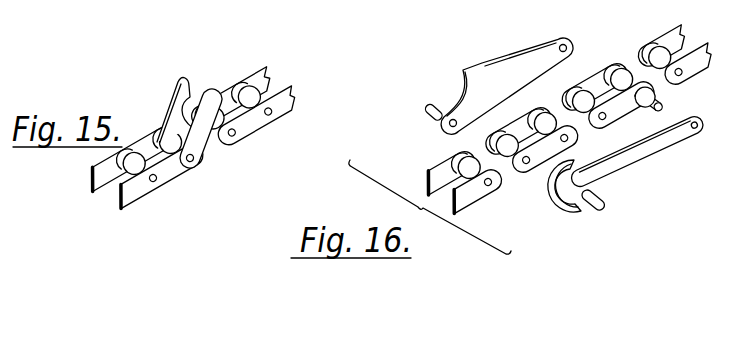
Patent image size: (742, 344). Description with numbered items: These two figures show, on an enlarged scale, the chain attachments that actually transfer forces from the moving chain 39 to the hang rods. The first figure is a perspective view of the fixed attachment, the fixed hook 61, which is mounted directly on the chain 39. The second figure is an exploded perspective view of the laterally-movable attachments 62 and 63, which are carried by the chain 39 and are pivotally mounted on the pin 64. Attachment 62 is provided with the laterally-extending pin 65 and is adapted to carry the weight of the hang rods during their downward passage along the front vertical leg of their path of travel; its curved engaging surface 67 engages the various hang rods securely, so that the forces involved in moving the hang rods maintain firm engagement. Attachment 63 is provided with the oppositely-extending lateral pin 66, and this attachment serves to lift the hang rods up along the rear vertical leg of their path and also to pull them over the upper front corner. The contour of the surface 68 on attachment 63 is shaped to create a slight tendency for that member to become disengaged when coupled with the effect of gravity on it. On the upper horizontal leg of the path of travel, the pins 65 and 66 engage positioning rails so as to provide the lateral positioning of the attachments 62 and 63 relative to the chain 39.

In FIG. 15, the chain 39 is at (289, 107).
In FIG. 16, the chain 39 is at (447, 172).
In FIG. 15, the fixed hook 61 is at (175, 112).
In FIG. 16, the laterally-movable attachment 62 is at (507, 81).
In FIG. 16, the laterally-movable attachment 63 is at (625, 170).
In FIG. 16, the pin 64 is at (659, 88).
In FIG. 16, the laterally-extending pin 65 is at (434, 104).
In FIG. 16, the oppositely-extending lateral pin 66 is at (596, 213).
In FIG. 16, the curved engaging surface 67 is at (472, 88).
In FIG. 16, the surface 68 is at (580, 163).